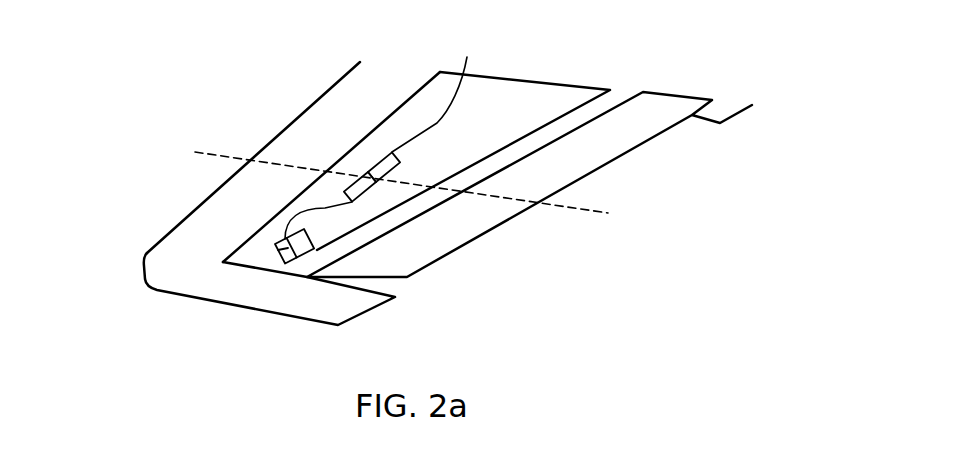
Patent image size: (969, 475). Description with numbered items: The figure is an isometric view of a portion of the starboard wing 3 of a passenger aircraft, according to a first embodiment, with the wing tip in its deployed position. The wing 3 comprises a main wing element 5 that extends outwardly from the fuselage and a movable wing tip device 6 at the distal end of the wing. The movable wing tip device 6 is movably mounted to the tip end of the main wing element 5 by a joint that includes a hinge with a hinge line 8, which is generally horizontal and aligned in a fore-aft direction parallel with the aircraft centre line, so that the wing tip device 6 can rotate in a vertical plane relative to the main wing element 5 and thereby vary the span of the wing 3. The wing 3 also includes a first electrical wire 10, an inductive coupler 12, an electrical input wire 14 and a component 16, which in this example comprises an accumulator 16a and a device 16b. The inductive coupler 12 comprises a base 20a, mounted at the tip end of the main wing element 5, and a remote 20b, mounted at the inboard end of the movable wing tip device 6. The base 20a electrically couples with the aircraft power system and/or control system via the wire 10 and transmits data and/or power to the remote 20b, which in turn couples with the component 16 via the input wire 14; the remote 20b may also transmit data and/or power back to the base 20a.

The starboard wing 3 is at (666, 53).
The main wing element 5 is at (331, 88).
The movable wing tip device 6 is at (173, 228).
The hinge line 8 is at (220, 155).
The first electrical wire 10 is at (468, 57).
The inductive coupler 12 is at (345, 158).
The electrical input wire 14 is at (304, 229).
The component 16 is at (266, 251).
The accumulator 16a is at (304, 229).
The device 16b is at (286, 264).
The base 20a is at (378, 160).
The remote 20b is at (343, 191).